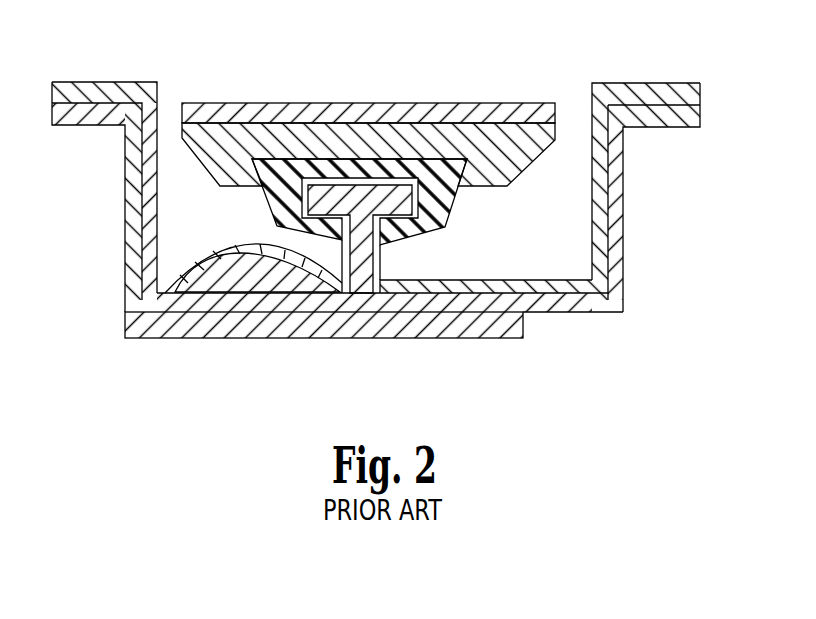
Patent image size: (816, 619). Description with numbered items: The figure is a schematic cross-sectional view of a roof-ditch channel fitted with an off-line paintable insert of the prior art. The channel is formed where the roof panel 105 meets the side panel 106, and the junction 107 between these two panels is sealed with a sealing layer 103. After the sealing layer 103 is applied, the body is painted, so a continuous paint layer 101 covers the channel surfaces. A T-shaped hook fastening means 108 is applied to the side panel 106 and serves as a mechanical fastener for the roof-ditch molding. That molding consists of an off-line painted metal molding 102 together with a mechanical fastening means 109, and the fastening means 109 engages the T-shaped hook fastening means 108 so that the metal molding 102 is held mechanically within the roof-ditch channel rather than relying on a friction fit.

The paint layer 101 is at (283, 107).
The metal molding 102 is at (512, 165).
The sealing layer 103 is at (205, 295).
The roof panel 105 is at (133, 223).
The side panel 106 is at (575, 302).
The junction 107 is at (267, 303).
The T-shaped hook fastening means 108 is at (371, 256).
The fastening means 109 is at (392, 167).